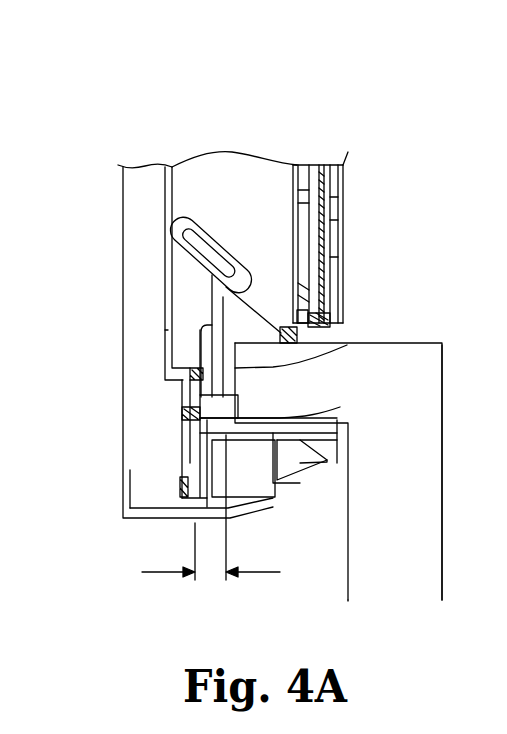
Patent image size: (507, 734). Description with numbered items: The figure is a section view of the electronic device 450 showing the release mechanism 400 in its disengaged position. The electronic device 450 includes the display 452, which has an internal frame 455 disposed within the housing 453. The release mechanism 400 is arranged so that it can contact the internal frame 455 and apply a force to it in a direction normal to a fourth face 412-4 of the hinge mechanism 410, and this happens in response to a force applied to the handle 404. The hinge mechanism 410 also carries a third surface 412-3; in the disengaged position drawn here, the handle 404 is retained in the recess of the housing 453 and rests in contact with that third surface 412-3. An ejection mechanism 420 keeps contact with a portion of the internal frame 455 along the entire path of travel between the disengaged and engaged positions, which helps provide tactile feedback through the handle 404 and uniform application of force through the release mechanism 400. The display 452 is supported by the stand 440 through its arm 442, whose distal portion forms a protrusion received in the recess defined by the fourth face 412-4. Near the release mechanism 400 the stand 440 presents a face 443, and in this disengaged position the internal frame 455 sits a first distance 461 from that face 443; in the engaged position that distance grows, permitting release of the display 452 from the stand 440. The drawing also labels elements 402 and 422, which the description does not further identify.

The electronic device 450 is at (186, 105).
The display 452 is at (137, 232).
The housing 453 is at (160, 272).
The internal frame 455 is at (166, 330).
The release mechanism 400 is at (224, 233).
The ejection mechanism 420 is at (268, 278).
The face 443 is at (235, 397).
The fourth face 412-4 is at (347, 345).
The third surface 412-3 is at (340, 407).
The latch engagement feature 402 is at (185, 376).
The hinge mechanism 410 is at (185, 408).
The handle 404 is at (288, 520).
The wedge member 422 is at (290, 477).
The arm 442 is at (443, 545).
The stand 440 is at (440, 501).
The first distance 461 is at (214, 573).